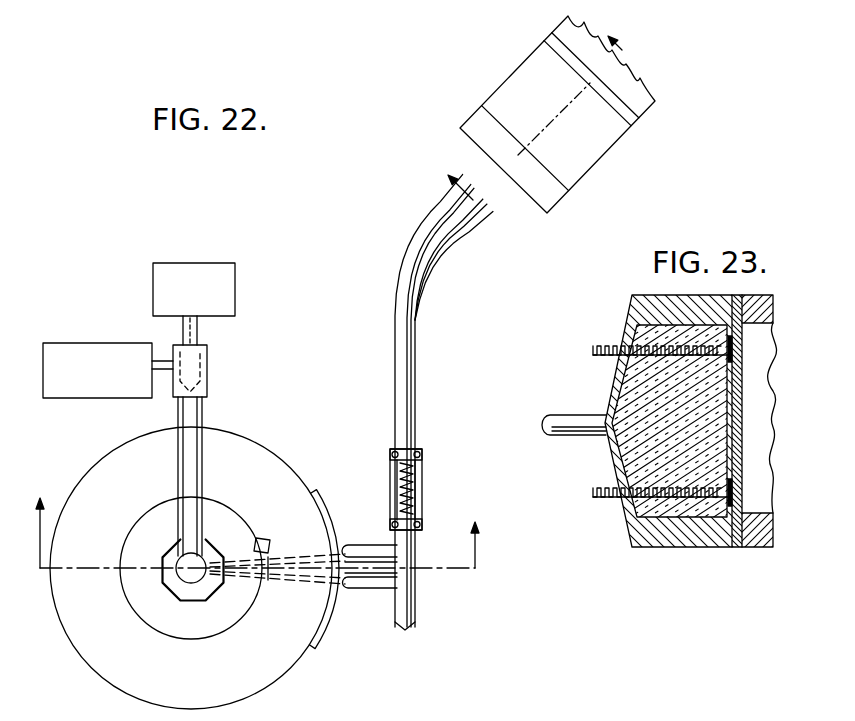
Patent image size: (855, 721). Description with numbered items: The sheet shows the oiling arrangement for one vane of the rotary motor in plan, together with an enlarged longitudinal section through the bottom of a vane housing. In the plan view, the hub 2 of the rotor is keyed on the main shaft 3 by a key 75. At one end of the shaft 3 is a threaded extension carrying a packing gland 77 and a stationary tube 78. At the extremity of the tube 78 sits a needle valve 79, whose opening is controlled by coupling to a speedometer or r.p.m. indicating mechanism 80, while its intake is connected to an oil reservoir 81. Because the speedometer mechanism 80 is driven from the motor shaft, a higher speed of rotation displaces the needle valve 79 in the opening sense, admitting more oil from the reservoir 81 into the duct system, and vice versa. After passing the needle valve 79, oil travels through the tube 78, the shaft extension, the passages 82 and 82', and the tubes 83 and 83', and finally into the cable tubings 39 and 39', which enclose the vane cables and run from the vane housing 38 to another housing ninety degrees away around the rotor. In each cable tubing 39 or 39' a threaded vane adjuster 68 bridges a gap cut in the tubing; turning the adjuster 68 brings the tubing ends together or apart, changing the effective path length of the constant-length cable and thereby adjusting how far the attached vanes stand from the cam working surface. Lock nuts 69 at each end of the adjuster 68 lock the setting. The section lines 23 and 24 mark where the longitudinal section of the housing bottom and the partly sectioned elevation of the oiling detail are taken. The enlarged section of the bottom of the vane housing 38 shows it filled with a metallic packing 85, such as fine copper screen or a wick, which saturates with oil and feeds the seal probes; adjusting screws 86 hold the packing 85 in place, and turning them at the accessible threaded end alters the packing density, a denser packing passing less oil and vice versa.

In FIG. 22, the hub 2 is at (194, 568).
In FIG. 22, the shaft 3 is at (191, 568).
In FIG. 22, the section line 23— 23 is at (529, 107).
In FIG. 22, the section line 24— 24 is at (259, 517).
In FIG. 22, the vane housing 38 is at (557, 114).
In FIG. 23, the vane housing 38 is at (697, 545).
In FIG. 22, the cable tubing 39 is at (467, 372).
In FIG. 22, the cable tubing 39' is at (484, 230).
In FIG. 22, the vane adjuster 68 is at (422, 489).
In FIG. 22, the lock nuts 69 is at (426, 449).
In FIG. 22, the key 75 is at (270, 530).
In FIG. 22, the packing gland 77 is at (208, 592).
In FIG. 22, the stationary tube 78 is at (197, 460).
In FIG. 22, the needle valve 79 is at (207, 371).
In FIG. 22, the speedometer or r.p.m. indicating mechanism 80 is at (219, 257).
In FIG. 22, the oil reservoir 81 is at (117, 345).
In FIG. 22, the passage 82 is at (277, 559).
In FIG. 22, the passage 82' is at (277, 588).
In FIG. 22, the tube 83 is at (369, 544).
In FIG. 22, the tube 83' is at (370, 593).
In FIG. 23, the metallic packing 85 is at (628, 404).
In FIG. 23, the adjusting screws 86 is at (603, 346).